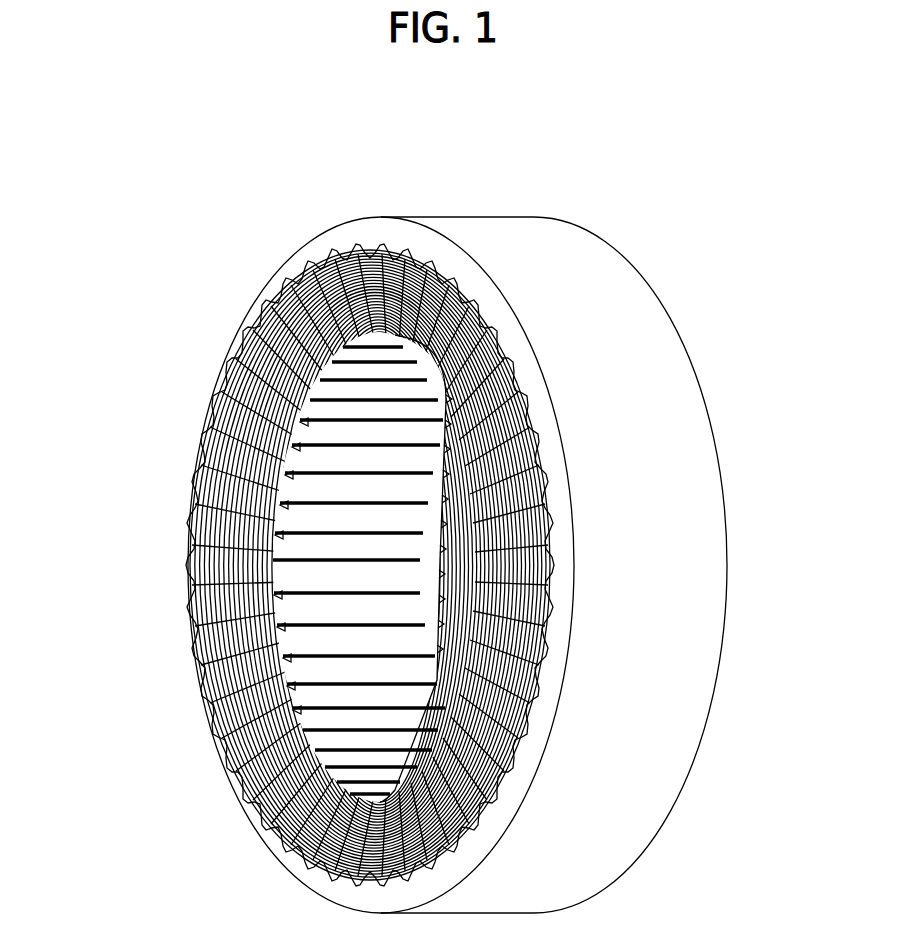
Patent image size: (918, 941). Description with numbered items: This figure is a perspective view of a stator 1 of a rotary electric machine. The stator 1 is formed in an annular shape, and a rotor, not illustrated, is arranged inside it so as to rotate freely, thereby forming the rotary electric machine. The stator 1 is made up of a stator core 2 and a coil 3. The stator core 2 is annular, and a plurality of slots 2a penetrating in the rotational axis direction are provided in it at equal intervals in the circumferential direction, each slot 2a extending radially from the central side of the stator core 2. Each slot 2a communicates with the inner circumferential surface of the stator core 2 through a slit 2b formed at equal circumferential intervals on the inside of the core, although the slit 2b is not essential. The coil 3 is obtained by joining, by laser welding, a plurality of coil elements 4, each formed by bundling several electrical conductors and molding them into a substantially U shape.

The stator 1 is at (232, 190).
The stator core 2 is at (675, 380).
The slots 2a is at (533, 485).
The slit 2b is at (357, 532).
The coil 3 is at (418, 248).
The coil elements 4 is at (452, 300).